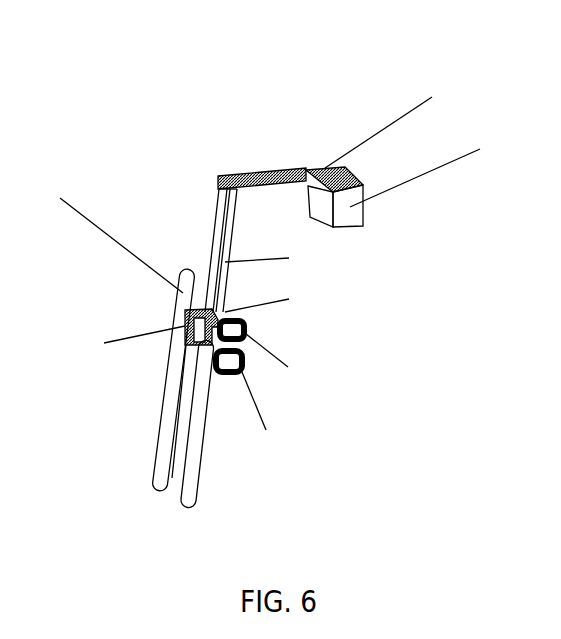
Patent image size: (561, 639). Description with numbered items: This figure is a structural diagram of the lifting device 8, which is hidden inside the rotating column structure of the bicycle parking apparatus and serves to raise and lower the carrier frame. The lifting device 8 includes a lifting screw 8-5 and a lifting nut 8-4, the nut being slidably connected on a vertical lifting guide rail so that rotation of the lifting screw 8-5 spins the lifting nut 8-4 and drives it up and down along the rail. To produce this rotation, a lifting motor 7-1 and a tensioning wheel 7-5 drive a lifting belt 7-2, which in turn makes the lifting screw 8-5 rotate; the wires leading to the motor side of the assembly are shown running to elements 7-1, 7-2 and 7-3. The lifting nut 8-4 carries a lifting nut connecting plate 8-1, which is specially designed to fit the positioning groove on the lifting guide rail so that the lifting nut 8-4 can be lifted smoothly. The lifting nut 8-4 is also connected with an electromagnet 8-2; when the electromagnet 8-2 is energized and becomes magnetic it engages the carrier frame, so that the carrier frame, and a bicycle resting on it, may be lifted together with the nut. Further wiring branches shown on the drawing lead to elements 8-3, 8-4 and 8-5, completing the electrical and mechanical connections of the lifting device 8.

The lifting device 8 is at (113, 145).
The tensioning wheel 7-5 is at (353, 180).
The lifting motor 7-1 is at (60, 198).
The lifting belt 7-2 is at (458, 97).
The wire connector 7-3 is at (503, 149).
The lifting nut connecting plate 8-1 is at (104, 343).
The electromagnet 8-2 is at (317, 257).
The wire connector 8-3 is at (317, 299).
The lifting nut 8-4 is at (314, 368).
The lifting screw 8-5 is at (291, 433).